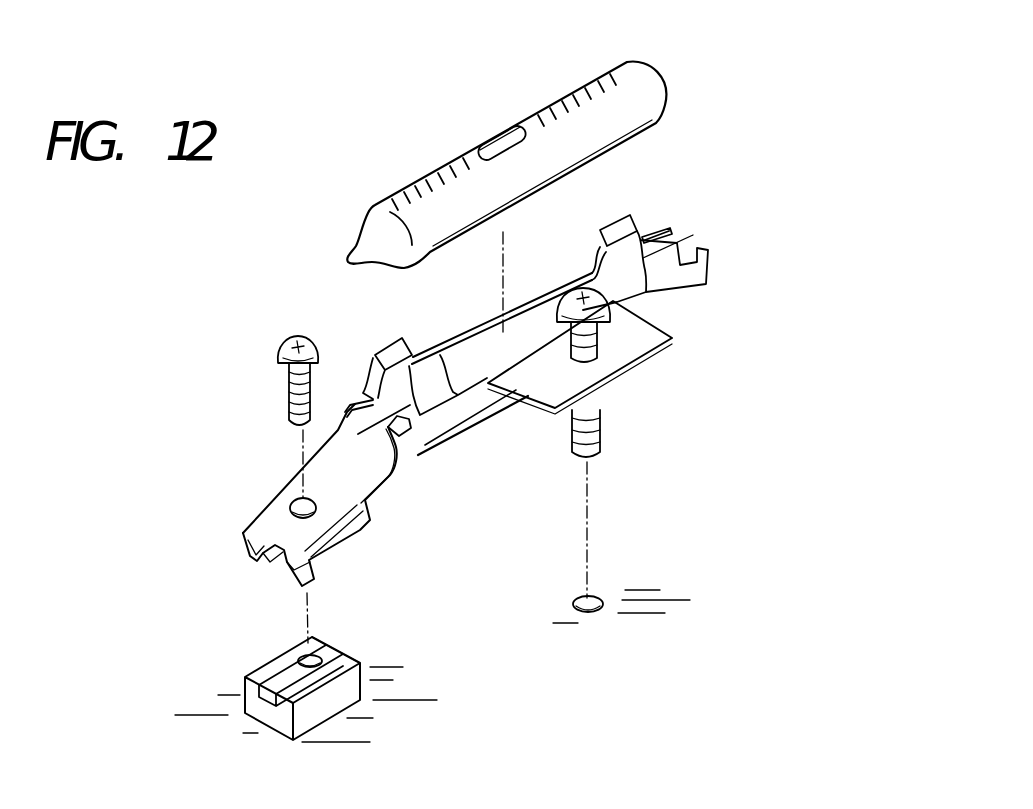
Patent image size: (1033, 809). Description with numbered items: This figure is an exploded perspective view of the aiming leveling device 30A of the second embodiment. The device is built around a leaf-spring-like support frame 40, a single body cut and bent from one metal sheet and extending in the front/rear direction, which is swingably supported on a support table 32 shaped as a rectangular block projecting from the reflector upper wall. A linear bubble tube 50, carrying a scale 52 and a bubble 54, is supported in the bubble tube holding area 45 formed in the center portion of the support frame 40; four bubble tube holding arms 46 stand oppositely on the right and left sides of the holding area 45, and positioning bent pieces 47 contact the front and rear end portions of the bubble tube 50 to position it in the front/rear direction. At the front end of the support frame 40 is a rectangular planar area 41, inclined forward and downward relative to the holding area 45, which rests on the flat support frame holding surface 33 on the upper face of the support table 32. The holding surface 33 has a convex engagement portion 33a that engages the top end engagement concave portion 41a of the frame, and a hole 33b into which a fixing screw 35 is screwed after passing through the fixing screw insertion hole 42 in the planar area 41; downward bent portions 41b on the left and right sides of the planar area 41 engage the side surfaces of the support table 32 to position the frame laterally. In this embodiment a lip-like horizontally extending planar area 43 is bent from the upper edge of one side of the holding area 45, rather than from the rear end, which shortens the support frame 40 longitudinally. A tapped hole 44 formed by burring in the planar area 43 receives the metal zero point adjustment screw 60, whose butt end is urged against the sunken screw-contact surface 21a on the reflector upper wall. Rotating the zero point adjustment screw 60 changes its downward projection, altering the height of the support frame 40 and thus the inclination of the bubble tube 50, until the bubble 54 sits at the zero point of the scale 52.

The aiming leveling device 30A is at (360, 200).
The bubble tube 50 is at (495, 112).
The scale 52 is at (445, 187).
The bubble 54 is at (508, 132).
The support frame 40 is at (370, 302).
The rectangular planar area 41 is at (277, 487).
The engagement concave portion 41a is at (255, 558).
The downward bent portions 41b is at (252, 568).
The fixing screw insertion hole 42 is at (293, 512).
The planar area 43 is at (654, 342).
The tapped hole 44 is at (607, 347).
The bubble tube holding area 45 is at (497, 412).
The bubble tube holding arms 46 is at (375, 360).
The positioning bent pieces 47 is at (350, 402).
The zero point adjustment screw 60 is at (612, 308).
The fixing screw 35 is at (278, 355).
The support table 32 is at (263, 710).
The support frame holding surface 33 is at (292, 652).
The convex engagement portion 33a is at (255, 667).
The hole 33b is at (322, 653).
The screw-contact surface 21a is at (600, 597).